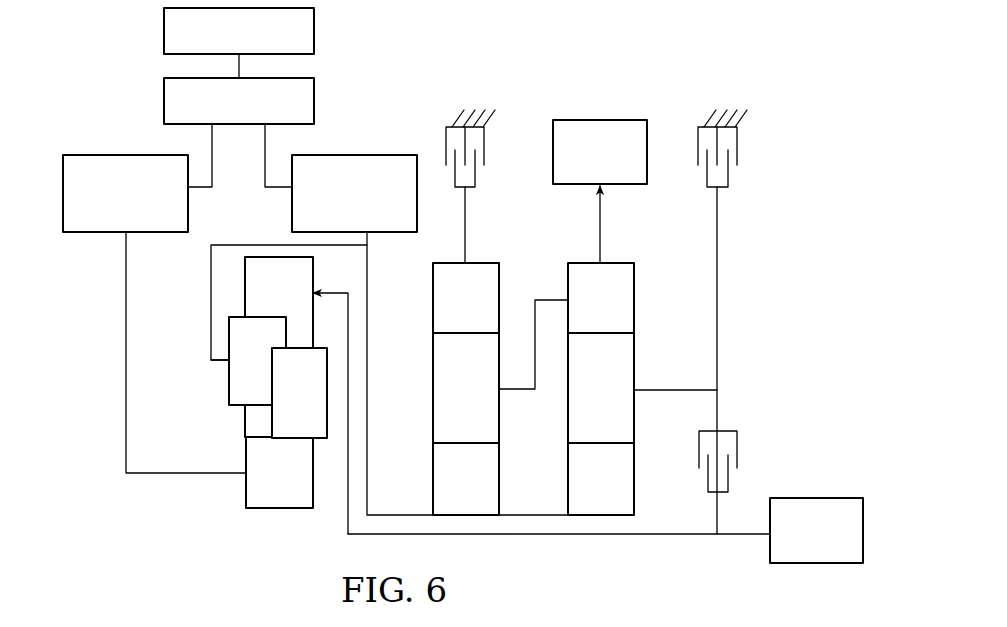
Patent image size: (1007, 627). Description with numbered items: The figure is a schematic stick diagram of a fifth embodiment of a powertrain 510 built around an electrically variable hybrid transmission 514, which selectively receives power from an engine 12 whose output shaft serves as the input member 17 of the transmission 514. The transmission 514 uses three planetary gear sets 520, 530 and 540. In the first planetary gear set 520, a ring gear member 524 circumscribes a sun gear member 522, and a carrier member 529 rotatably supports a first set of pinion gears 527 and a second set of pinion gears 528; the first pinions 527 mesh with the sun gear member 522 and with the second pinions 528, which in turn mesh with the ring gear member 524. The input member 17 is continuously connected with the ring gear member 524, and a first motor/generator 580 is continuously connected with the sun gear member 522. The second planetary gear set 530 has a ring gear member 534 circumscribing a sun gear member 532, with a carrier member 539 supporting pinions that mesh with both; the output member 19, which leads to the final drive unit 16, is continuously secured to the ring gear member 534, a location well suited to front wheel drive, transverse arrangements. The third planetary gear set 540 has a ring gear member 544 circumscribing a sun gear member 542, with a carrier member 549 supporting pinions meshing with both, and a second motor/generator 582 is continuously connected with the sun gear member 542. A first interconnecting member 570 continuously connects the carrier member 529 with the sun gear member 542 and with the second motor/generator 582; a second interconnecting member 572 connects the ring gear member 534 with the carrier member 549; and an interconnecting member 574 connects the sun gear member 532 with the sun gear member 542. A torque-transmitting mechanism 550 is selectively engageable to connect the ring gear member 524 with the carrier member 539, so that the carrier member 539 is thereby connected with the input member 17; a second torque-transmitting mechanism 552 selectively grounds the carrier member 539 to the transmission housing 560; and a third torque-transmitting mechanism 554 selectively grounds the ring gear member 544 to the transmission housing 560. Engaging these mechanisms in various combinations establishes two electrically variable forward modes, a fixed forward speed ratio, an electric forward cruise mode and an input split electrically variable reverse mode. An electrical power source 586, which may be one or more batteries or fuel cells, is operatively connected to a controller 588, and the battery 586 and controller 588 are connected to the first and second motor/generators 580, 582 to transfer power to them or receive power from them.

The engine 12 is at (807, 490).
The final drive unit 16 is at (608, 112).
The input member 17 is at (748, 534).
The output member 19 is at (603, 227).
The powertrain 510 is at (229, 141).
The transmission 514 is at (605, 316).
The planetary gear set 520 is at (242, 421).
The sun gear member 522 is at (279, 472).
The ring gear member 524 is at (279, 347).
The first set of pinion gears 527 is at (299, 393).
The second set of pinion gears 528 is at (257, 361).
The carrier member 529 is at (222, 362).
The second planetary gear set 530 is at (629, 424).
The sun gear member 532 is at (650, 495).
The ring gear member 534 is at (601, 298).
The carrier member 539 is at (601, 388).
The planetary gear set 540 is at (496, 424).
The sun gear member 542 is at (518, 495).
The ring gear member 544 is at (466, 298).
The carrier member 549 is at (466, 388).
The torque-transmitting mechanism 550 is at (747, 445).
The second torque-transmitting mechanism 552 is at (748, 152).
The third torque-transmitting mechanism 554 is at (500, 150).
The transmission housing 560 is at (455, 110).
The first interconnecting member 570 is at (211, 310).
The second interconnecting member 572 is at (548, 298).
The interconnecting member 574 is at (547, 510).
The first motor/generator 580 is at (100, 232).
The second motor/generator 582 is at (390, 155).
The electrical power source 586 is at (164, 32).
The controller 588 is at (164, 98).